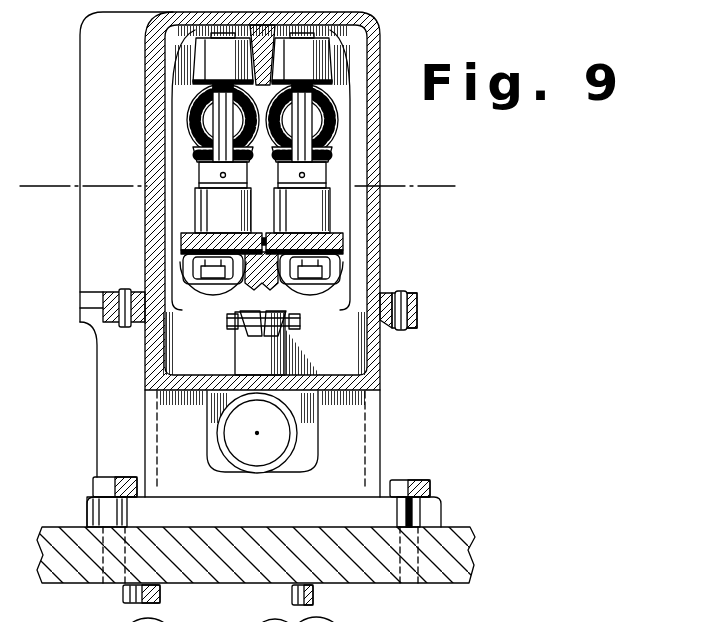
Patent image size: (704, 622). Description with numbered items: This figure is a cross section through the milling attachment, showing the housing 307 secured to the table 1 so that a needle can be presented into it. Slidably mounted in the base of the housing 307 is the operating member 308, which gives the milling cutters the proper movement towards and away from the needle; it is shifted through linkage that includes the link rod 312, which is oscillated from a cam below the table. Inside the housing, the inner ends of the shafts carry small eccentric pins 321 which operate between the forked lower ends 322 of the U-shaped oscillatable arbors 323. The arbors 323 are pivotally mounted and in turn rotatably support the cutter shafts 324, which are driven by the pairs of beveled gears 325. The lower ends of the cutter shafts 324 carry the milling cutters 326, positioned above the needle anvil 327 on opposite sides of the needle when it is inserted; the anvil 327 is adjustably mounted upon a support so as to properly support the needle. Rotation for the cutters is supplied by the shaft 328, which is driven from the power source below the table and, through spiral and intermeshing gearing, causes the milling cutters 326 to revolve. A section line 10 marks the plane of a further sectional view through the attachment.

The table 1 is at (457, 528).
The section line 10 is at (39, 178).
The housing 307 is at (380, 214).
The operating member 308 is at (243, 435).
The link rod 312 is at (313, 597).
The eccentric pins 321 is at (204, 297).
The forked lower ends 322 is at (190, 270).
The U-shaped oscillatable arbors 323 is at (317, 63).
The cutter shafts 324 is at (217, 95).
The beveled gears 325 is at (195, 152).
The milling cutters 326 is at (185, 240).
The needle anvil 327 is at (255, 328).
The shaft 328 is at (162, 594).